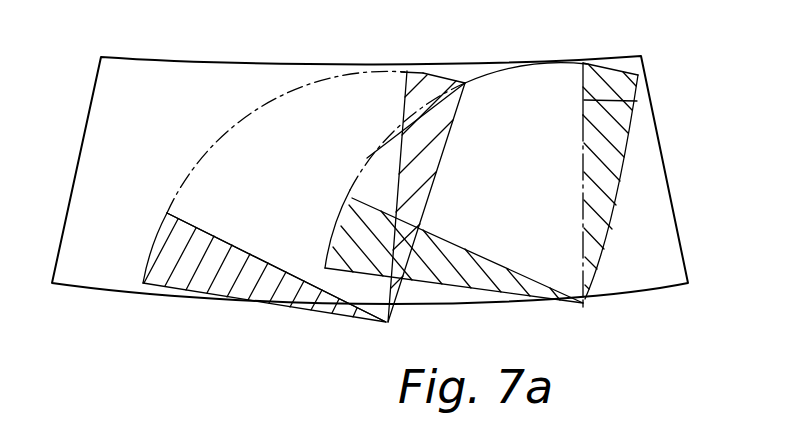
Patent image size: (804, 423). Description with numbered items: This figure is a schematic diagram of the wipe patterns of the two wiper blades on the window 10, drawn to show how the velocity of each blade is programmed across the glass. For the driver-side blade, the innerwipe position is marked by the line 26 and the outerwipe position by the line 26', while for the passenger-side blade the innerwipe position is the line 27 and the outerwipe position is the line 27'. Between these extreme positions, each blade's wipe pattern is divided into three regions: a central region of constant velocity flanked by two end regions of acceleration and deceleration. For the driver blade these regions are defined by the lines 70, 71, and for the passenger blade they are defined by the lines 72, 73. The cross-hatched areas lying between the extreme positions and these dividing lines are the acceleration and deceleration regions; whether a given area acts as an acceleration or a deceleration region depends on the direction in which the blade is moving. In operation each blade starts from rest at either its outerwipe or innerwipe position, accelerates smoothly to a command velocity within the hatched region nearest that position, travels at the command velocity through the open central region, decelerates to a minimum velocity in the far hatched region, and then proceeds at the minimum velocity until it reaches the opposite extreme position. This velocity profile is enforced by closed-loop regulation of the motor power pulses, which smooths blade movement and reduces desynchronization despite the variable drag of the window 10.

The window 10 is at (225, 50).
The innerwipe position line of DRIV blade 26 is at (454, 278).
The outerwipe position of DRIV blade 26' is at (661, 185).
The innerwipe position line of PASS blade 27 is at (264, 281).
The outerwipe position of PASS blade 27' is at (465, 197).
The region-defining line for DRIV blade 70 is at (638, 101).
The region-defining line for DRIV blade 71 is at (483, 257).
The region-defining line for PASS blade 72 is at (401, 163).
The region-defining line for PASS blade 73 is at (268, 258).